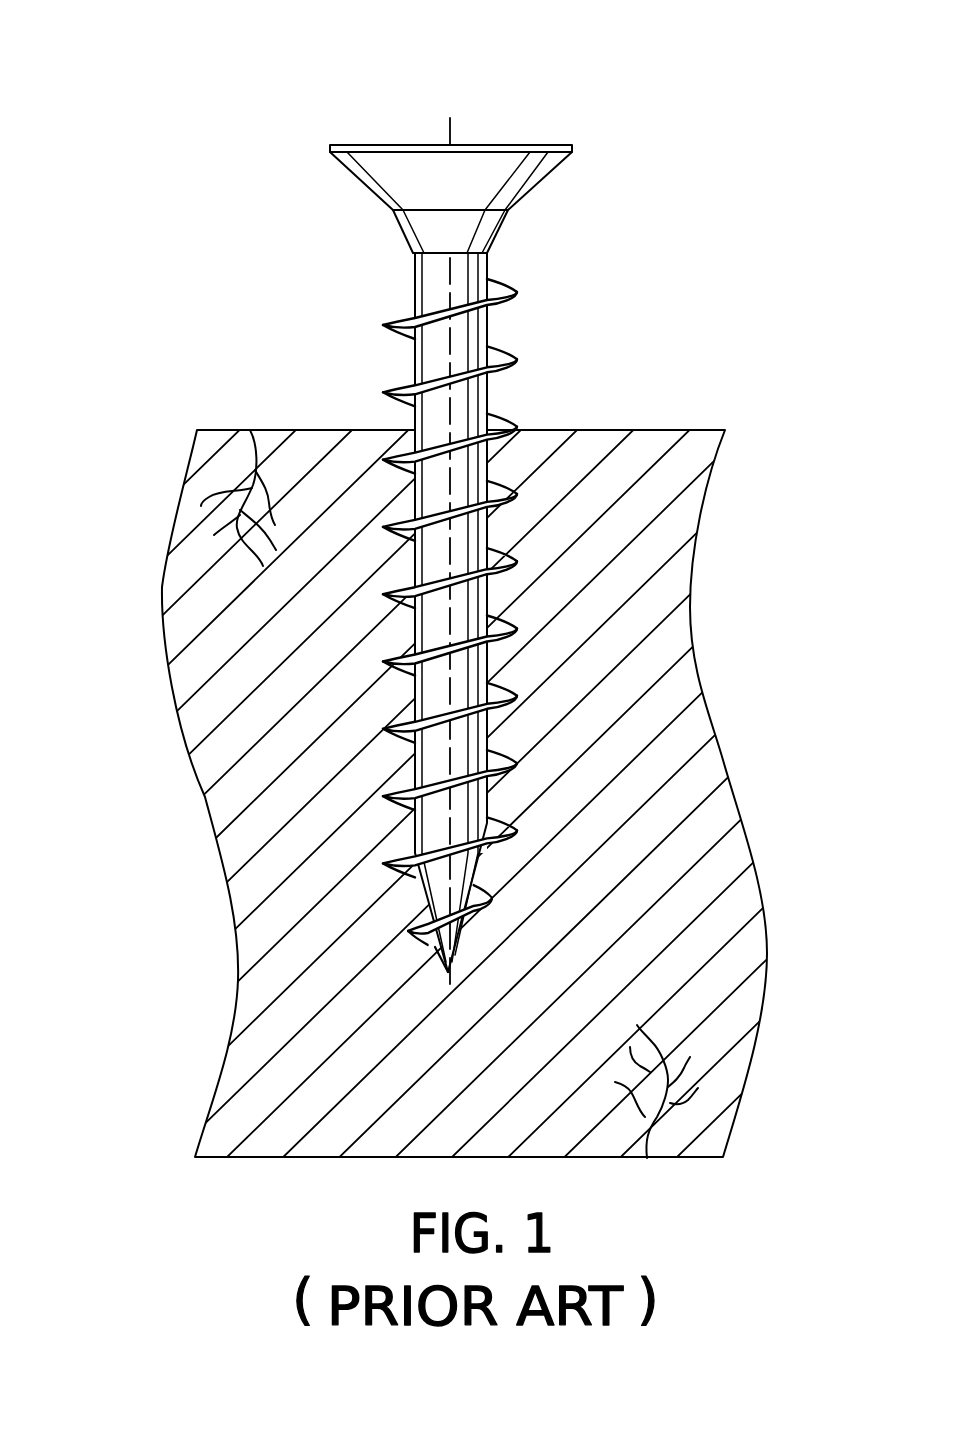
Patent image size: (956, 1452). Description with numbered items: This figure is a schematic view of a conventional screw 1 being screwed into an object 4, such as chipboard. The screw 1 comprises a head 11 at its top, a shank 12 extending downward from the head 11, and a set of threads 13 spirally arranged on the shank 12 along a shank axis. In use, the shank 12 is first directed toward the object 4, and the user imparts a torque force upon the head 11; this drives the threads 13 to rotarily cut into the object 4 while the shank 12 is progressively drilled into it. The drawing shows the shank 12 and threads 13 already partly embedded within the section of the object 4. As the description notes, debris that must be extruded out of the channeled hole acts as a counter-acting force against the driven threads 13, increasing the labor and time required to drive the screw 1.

The screw 1 is at (337, 492).
The head 11 is at (405, 233).
The shank 12 is at (425, 355).
The threads 13 is at (410, 586).
The object 4 is at (600, 430).